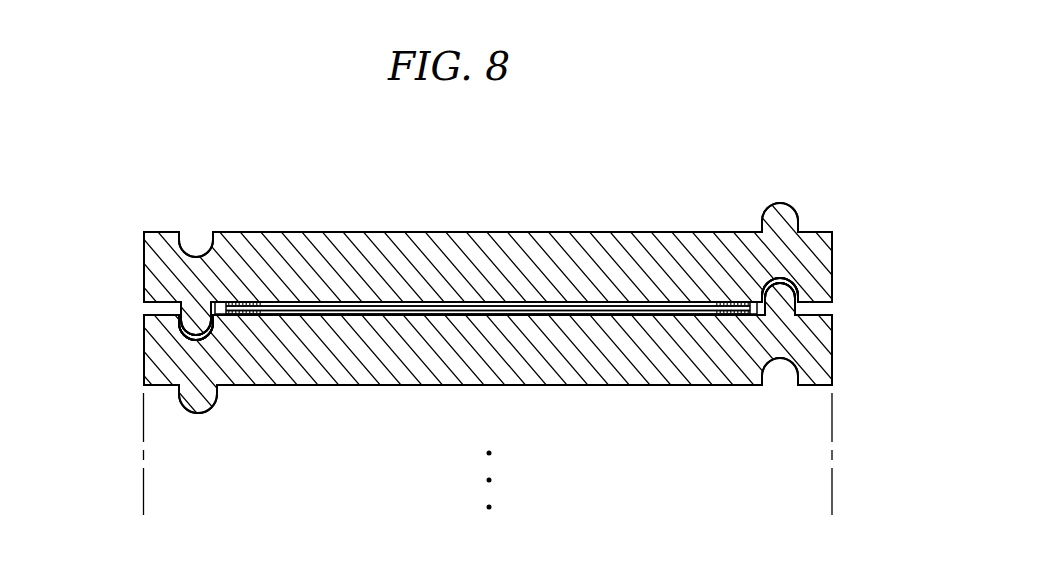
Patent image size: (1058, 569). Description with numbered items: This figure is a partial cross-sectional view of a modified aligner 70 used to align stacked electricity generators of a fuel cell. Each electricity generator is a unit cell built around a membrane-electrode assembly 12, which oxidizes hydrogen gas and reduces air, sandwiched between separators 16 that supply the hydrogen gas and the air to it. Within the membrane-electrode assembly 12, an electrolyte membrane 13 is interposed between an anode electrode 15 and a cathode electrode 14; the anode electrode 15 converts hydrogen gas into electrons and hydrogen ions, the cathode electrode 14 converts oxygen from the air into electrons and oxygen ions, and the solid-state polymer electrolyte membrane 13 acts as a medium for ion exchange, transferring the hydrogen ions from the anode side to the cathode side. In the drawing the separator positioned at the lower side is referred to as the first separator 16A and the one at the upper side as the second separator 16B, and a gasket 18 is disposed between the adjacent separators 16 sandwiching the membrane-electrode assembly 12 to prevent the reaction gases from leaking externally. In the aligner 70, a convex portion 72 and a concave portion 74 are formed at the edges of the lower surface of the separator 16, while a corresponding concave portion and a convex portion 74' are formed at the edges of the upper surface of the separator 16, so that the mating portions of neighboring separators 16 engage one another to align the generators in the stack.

The membrane-electrode assembly 12 is at (342, 440).
The electrolyte membrane 13 is at (394, 306).
The cathode electrode 14 is at (436, 303).
The anode electrode 15 is at (351, 316).
The separator 16 is at (562, 448).
The first separator 16A is at (643, 358).
The second separator 16B is at (570, 287).
The gasket 18 is at (229, 316).
The aligner 70 is at (75, 295).
The convex portion 72 is at (790, 283).
The concave portion 74 is at (147, 338).
The convex portion 74' is at (145, 314).